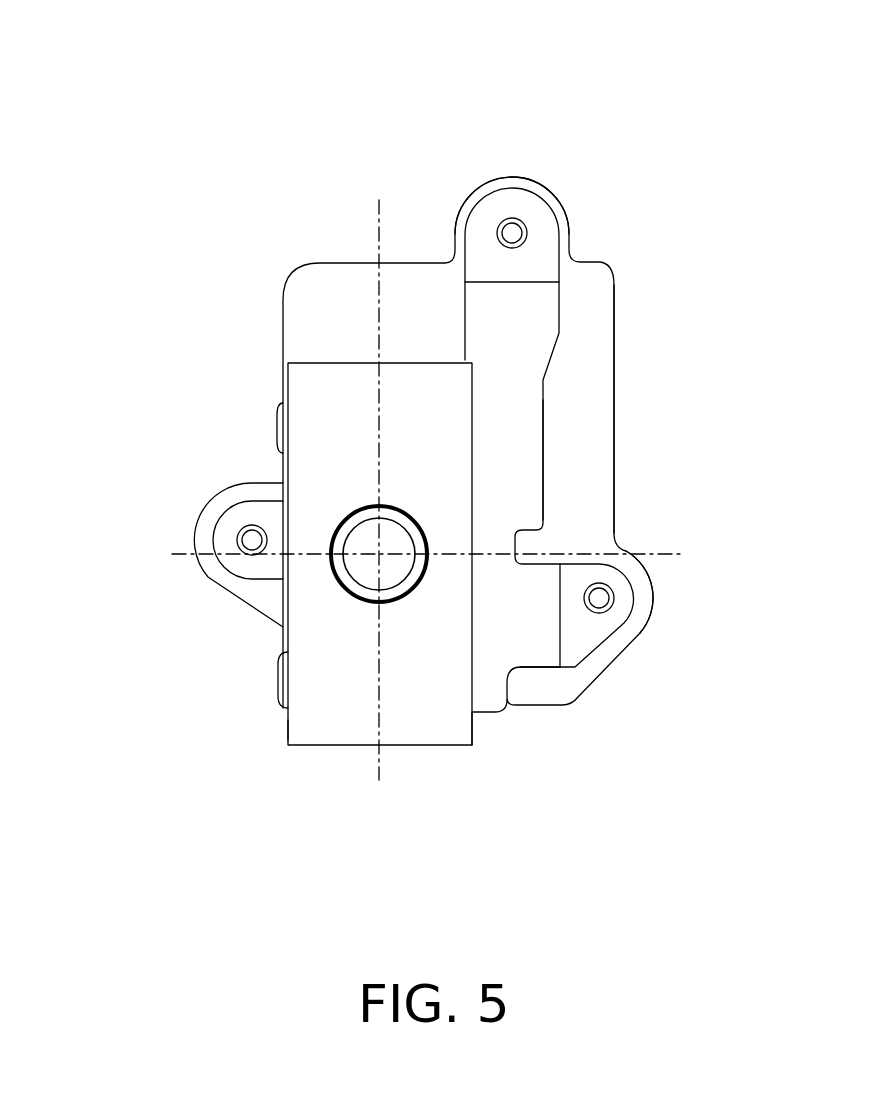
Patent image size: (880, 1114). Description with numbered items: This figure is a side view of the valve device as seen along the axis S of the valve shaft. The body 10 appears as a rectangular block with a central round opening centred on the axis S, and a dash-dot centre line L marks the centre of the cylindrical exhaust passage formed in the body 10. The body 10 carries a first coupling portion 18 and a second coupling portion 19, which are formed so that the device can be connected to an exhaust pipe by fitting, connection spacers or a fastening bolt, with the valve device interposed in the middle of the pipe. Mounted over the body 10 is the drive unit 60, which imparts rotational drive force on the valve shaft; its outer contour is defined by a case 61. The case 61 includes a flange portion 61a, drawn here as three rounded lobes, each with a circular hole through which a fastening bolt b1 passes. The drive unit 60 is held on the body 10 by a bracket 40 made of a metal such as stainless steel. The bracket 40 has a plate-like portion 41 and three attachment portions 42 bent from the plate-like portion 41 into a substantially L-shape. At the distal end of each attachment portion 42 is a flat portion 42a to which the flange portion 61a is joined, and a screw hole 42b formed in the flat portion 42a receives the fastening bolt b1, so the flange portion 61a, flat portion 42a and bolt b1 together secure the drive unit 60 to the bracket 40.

The body 10 is at (298, 360).
The first coupling portion 18 is at (287, 730).
The second coupling portion 19 is at (476, 718).
The bracket 40 is at (421, 426).
The plate-like portion 41 is at (523, 490).
The attachment portion 42 is at (416, 426).
The flat portion 42a is at (481, 213).
The screw hole 42b is at (506, 216).
The drive unit 60 is at (346, 258).
The case 61 is at (412, 377).
The flange portion 61a is at (556, 218).
The fastening bolt b1 is at (518, 220).
The centre line L is at (183, 553).
The axis S is at (378, 556).